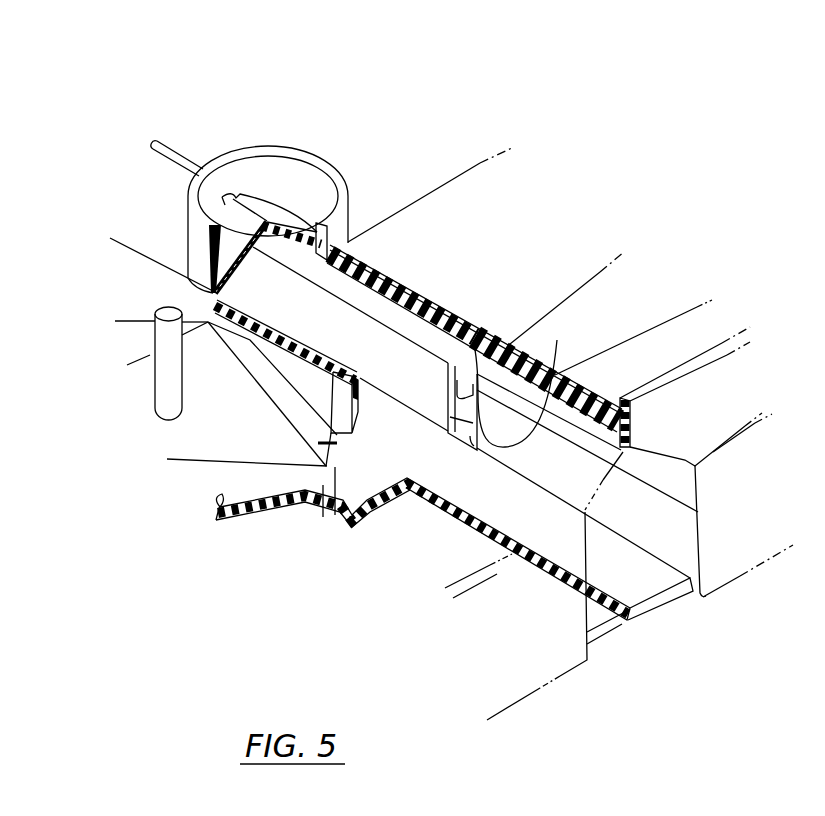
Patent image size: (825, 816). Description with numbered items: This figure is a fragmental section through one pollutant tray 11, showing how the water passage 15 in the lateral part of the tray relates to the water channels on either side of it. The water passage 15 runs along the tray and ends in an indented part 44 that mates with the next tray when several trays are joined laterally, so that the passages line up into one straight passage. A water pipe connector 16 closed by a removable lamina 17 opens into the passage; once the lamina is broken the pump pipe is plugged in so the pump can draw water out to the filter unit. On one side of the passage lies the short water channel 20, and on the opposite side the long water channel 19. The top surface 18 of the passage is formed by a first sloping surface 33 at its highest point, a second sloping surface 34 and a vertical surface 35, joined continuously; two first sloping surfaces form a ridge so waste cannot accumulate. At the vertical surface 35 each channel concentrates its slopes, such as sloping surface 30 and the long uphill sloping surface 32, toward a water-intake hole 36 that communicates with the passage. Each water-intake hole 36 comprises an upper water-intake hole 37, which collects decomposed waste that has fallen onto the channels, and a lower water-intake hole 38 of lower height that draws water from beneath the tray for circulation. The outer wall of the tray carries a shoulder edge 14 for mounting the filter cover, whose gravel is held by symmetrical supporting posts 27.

The pollutant tray 11 is at (725, 560).
The shoulder edge 14 is at (713, 452).
The water passage 15 is at (433, 463).
The water pipe connector 16 is at (300, 152).
The removable lamina 17 is at (293, 217).
The top surface 18 is at (149, 163).
The long water channel 19 is at (652, 287).
The short water channel 20 is at (112, 462).
The supporting posts 27 is at (163, 333).
The sloping surface 30 is at (153, 383).
The sloping surface 32 is at (217, 527).
The first sloping surface 33 is at (177, 177).
The second sloping surface 34 is at (250, 340).
The vertical surface 35 is at (290, 410).
The water-intake hole 36 is at (318, 443).
The upper water-intake hole 37 is at (492, 331).
The lower water-intake hole 38 is at (553, 376).
The indented part 44 is at (698, 563).